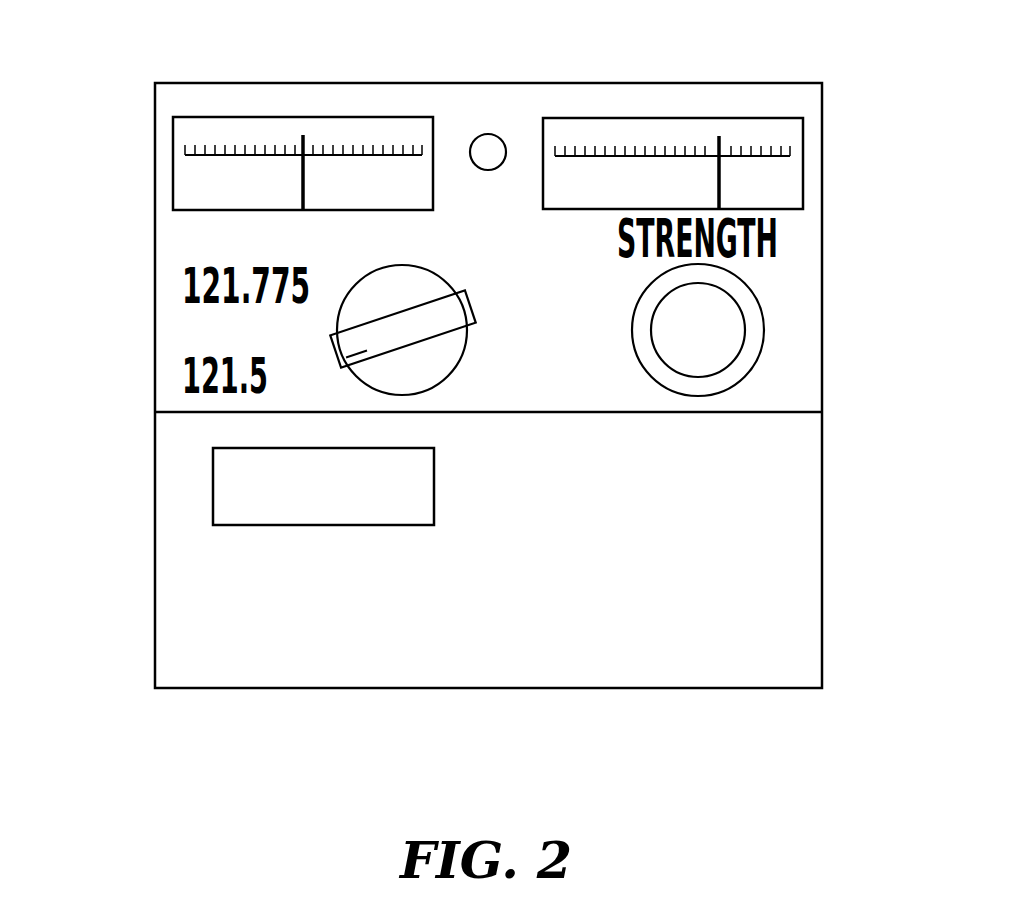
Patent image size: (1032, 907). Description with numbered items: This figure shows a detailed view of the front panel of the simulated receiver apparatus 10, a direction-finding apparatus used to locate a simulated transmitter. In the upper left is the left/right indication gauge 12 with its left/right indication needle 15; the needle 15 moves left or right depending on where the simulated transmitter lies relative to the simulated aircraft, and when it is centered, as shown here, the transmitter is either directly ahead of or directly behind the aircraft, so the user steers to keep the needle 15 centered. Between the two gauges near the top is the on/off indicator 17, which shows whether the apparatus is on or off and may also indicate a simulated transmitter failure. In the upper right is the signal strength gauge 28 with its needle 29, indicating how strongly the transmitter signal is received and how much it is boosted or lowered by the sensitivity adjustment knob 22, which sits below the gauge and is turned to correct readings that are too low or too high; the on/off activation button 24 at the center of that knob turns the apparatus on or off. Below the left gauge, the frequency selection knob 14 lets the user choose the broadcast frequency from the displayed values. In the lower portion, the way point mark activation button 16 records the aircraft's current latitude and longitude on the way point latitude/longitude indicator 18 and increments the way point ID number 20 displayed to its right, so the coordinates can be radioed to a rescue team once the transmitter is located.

The simulated receiver apparatus 10 is at (156, 41).
The left/right indication gauge 12 is at (185, 193).
The frequency selection knob 14 is at (307, 330).
The left/right indication needle 15 is at (303, 178).
The way point mark activation button 16 is at (228, 473).
The on/off indicator 17 is at (489, 135).
The way point latitude/longitude indicator 18 is at (168, 593).
The way point ID number 20 is at (808, 467).
The sensitivity adjustment knob 22 is at (757, 328).
The on/off activation button 24 is at (723, 309).
The signal strength gauge 28 is at (793, 192).
The signal strength needle 29 is at (722, 175).